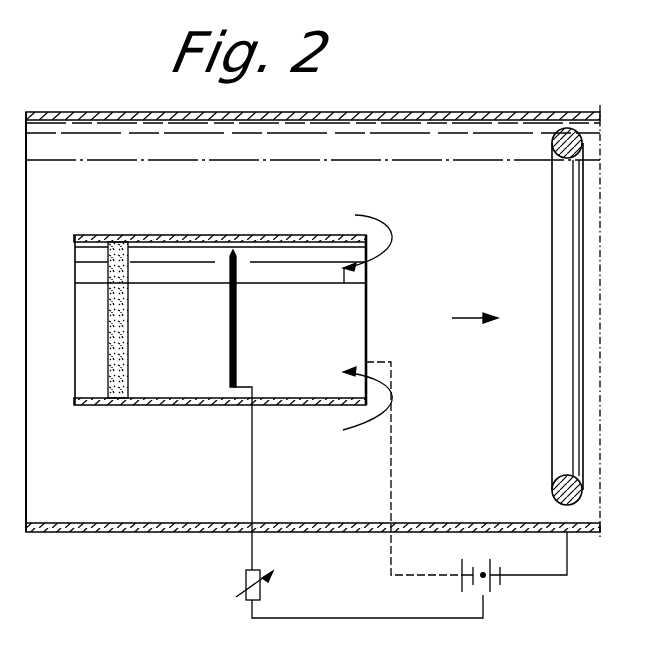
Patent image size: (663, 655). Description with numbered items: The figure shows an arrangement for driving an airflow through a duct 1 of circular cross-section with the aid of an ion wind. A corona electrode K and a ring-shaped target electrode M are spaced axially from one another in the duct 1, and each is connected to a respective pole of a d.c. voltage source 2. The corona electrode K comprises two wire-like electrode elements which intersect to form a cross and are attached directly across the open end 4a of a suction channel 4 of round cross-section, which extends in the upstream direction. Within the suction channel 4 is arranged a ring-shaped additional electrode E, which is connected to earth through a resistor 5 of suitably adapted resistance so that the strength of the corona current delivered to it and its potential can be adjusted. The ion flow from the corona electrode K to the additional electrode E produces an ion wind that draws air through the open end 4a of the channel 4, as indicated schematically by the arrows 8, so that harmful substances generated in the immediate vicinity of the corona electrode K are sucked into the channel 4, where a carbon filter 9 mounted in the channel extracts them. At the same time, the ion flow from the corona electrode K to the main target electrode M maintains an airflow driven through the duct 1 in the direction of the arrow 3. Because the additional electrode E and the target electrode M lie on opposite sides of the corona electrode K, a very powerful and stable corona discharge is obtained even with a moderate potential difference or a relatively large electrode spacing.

The duct 1 is at (56, 112).
The d.c. voltage source 2 is at (496, 558).
The arrow 3 is at (477, 315).
The suction channel 4 is at (189, 235).
The open end 4a is at (371, 272).
The resistor 5 is at (246, 580).
The arrows 8 is at (350, 366).
The carbon filter 9 is at (108, 298).
The additional electrode E is at (233, 250).
The corona electrode K is at (367, 300).
The target electrode M is at (548, 472).